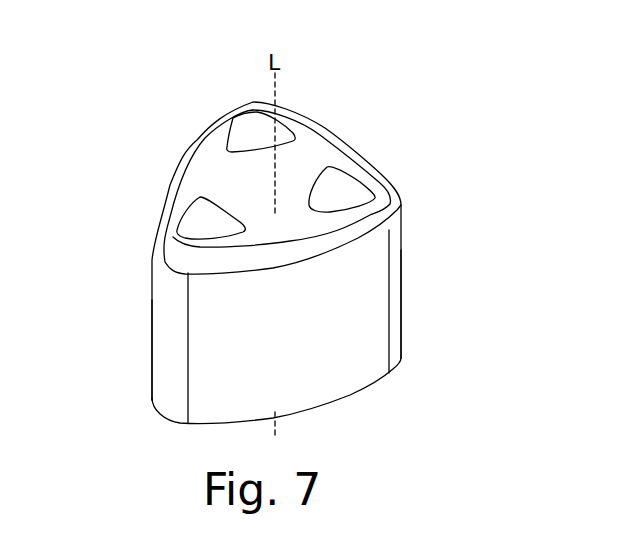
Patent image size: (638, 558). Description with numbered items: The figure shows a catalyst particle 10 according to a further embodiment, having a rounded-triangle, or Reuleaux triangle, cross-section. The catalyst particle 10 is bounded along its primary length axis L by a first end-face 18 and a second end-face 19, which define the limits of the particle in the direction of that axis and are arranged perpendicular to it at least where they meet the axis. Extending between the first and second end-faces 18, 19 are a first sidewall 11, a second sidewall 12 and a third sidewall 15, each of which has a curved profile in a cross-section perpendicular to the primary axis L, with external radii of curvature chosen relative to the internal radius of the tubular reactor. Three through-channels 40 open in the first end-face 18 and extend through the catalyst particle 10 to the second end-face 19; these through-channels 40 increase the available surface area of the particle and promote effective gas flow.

The catalyst particle 10 is at (280, 237).
The first sidewall 11 is at (176, 333).
The second sidewall 12 is at (408, 216).
The third sidewall 15 is at (373, 320).
The first end-face 18 is at (387, 199).
The second end-face 19 is at (340, 402).
The through-channels 40 is at (250, 132).